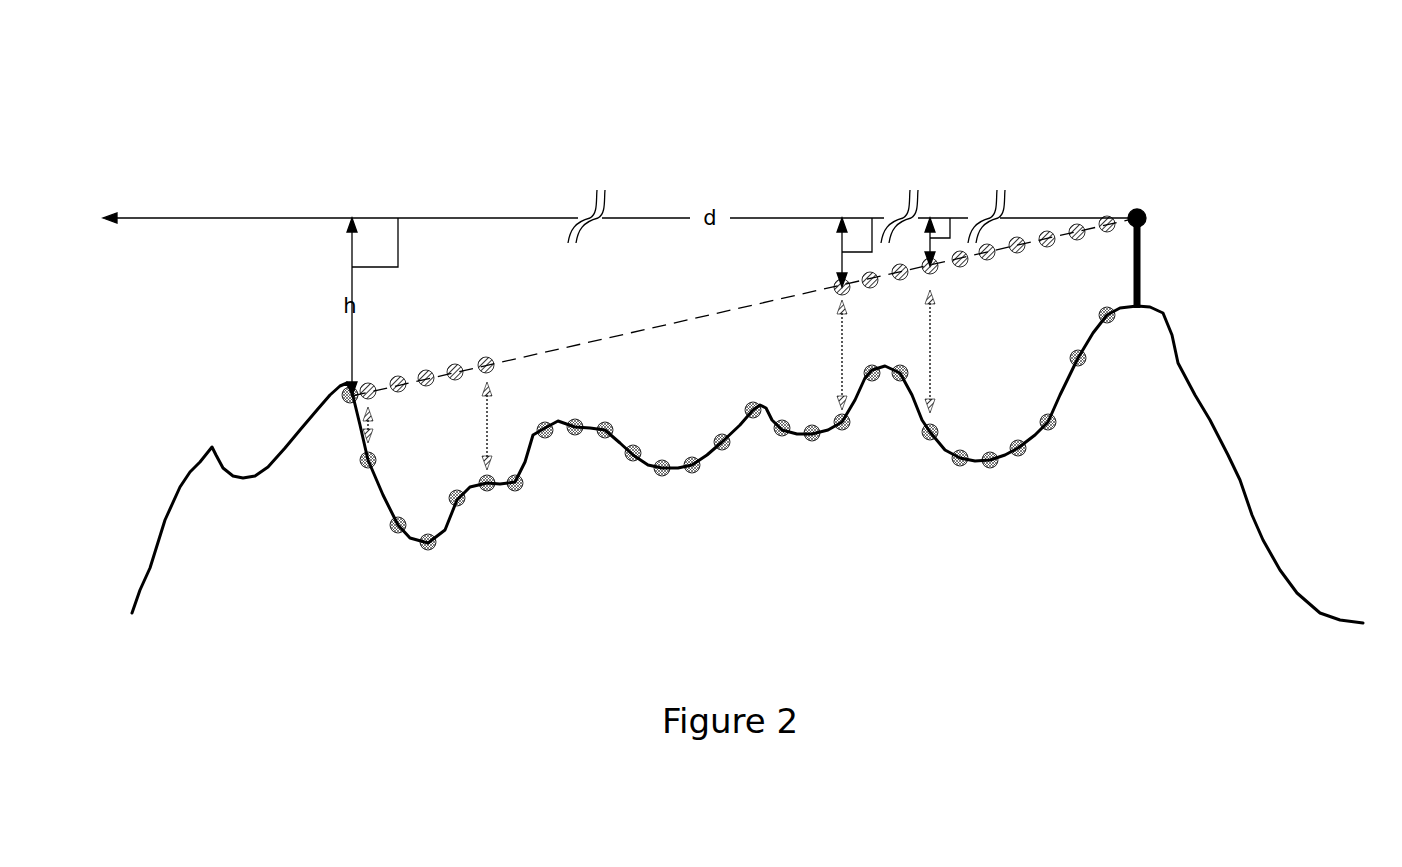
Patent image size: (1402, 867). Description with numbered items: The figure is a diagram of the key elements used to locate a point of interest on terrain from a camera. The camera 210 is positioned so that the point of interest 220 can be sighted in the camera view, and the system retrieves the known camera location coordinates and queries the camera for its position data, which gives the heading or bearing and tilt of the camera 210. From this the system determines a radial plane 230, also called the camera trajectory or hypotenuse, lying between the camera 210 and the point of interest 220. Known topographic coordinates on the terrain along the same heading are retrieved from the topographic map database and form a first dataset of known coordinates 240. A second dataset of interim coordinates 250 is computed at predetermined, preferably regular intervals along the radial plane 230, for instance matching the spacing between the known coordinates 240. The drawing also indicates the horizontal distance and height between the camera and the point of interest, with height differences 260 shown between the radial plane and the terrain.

The camera 210 is at (1145, 225).
The point of interest 220 is at (350, 399).
The radial plane 230 is at (673, 317).
The known coordinates 240 is at (605, 426).
The interim coordinates 250 is at (457, 372).
The height differences 260 is at (385, 428).